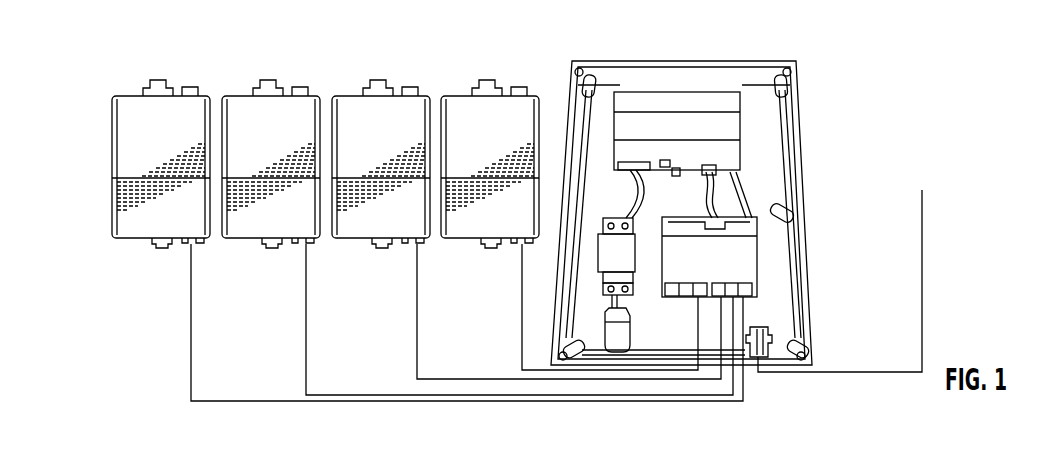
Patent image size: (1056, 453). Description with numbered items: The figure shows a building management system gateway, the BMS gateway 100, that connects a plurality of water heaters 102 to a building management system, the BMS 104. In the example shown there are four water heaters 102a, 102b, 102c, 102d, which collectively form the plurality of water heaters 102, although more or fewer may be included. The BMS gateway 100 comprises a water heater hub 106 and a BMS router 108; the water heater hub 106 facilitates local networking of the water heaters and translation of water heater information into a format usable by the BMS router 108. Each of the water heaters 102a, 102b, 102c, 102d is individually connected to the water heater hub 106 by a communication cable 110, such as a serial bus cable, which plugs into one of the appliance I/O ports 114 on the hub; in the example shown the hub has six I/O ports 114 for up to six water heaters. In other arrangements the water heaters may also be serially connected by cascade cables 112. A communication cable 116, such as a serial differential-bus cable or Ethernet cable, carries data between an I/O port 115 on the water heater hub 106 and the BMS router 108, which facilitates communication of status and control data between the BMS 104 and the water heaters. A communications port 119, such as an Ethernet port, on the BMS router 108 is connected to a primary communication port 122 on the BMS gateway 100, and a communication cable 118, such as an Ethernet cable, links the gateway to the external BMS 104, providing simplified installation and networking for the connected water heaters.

The BMS gateway 100 is at (692, 61).
The plurality of water heaters 102 is at (536, 46).
The water heater 102a is at (127, 92).
The water heater 102b is at (237, 92).
The water heater 102c is at (347, 92).
The water heater 102d is at (456, 92).
The BMS 104 is at (942, 68).
The water heater hub 106 is at (758, 249).
The BMS router 108 is at (742, 117).
The communication cable 110 is at (522, 293).
The cascade cable 112 is at (630, 165).
The I/O port 114 is at (758, 289).
The I/O port 115 is at (797, 214).
The communication cable 116 is at (800, 200).
The communication cable 118 is at (922, 255).
The communications port 119 is at (733, 168).
The primary communication port 122 is at (775, 346).